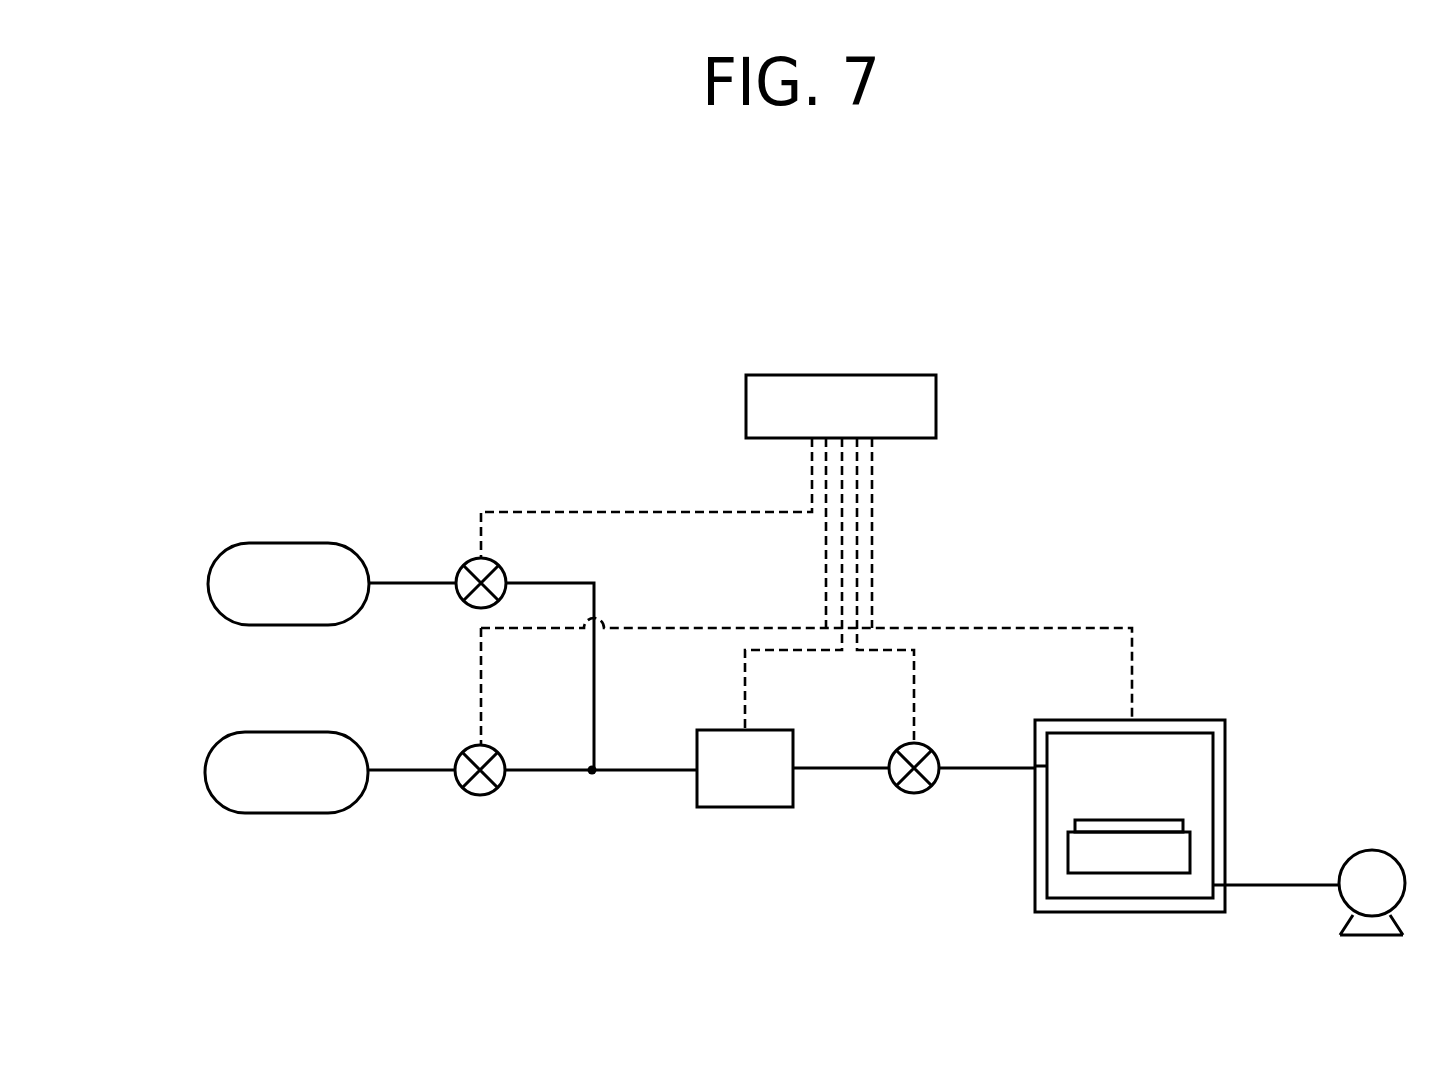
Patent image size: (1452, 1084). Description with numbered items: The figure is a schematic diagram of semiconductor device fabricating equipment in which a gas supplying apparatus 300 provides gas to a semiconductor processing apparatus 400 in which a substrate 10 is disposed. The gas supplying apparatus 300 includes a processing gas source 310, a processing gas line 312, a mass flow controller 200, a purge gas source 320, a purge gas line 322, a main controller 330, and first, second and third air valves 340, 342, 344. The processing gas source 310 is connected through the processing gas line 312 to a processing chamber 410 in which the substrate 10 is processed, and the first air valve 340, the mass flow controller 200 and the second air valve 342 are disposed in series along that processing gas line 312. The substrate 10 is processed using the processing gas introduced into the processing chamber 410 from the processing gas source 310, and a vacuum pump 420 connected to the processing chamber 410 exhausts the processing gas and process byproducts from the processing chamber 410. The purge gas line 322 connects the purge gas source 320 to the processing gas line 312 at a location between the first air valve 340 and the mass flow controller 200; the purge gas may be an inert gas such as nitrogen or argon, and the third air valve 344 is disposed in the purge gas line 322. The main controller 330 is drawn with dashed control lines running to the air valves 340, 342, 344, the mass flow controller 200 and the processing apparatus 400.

The substrate 10 is at (1168, 822).
The mass flow controller 200 is at (745, 807).
The gas supplying apparatus 300 is at (568, 443).
The processing gas source 310 is at (205, 772).
The processing gas line 312 is at (549, 772).
The purge gas source 320 is at (208, 584).
The purge gas line 322 is at (597, 601).
The main controller 330 is at (936, 403).
The first air valve 340 is at (461, 752).
The second air valve 342 is at (915, 793).
The third air valve 344 is at (462, 566).
The semiconductor processing apparatus 400 is at (1229, 688).
The processing chamber 410 is at (1225, 757).
The vacuum pump 420 is at (1380, 858).